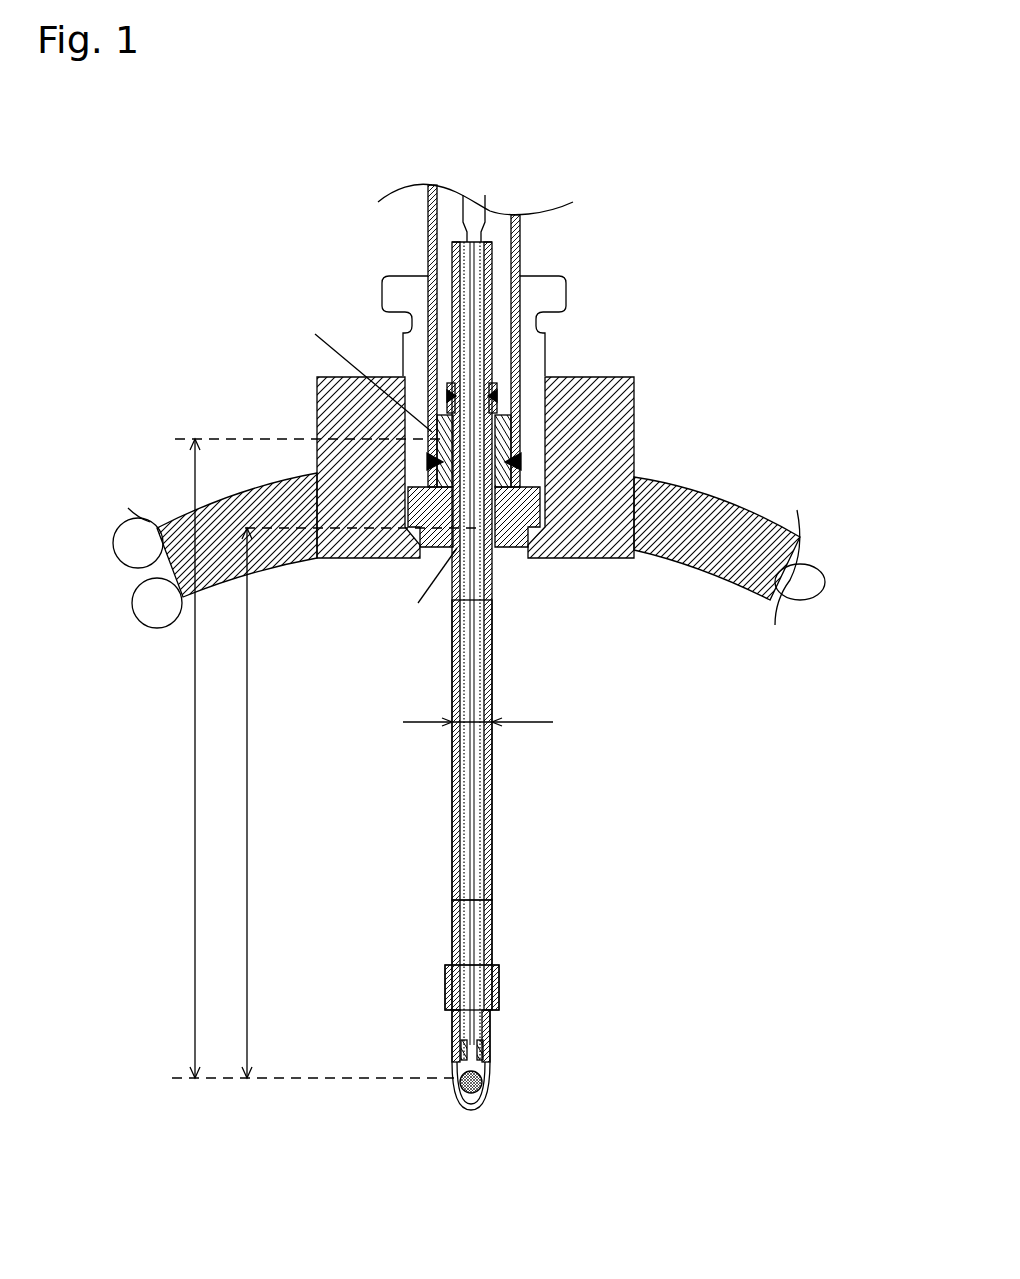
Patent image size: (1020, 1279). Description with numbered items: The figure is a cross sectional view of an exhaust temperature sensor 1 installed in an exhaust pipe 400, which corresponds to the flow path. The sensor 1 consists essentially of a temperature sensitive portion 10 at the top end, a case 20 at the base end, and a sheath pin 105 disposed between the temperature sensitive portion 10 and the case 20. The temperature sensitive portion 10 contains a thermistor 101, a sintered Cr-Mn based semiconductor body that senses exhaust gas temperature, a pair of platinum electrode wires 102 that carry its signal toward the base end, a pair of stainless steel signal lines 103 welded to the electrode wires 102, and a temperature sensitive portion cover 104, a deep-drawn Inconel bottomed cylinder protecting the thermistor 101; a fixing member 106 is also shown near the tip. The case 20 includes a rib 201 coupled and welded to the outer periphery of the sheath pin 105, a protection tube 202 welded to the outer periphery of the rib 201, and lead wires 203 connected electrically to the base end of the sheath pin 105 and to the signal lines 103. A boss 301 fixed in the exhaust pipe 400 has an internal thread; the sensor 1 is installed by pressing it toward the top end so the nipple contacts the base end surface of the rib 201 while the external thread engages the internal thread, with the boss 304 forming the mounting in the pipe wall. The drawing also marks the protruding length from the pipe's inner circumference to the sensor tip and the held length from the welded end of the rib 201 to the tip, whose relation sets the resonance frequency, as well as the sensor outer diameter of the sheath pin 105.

The exhaust temperature sensor 1 is at (742, 235).
The temperature sensitive portion 10 is at (653, 950).
The case 20 is at (150, 247).
The thermistor 101 is at (480, 1076).
The electrode wire 102 is at (458, 1047).
The signal lines 103 is at (478, 946).
The temperature sensitive portion cover 104 is at (492, 1003).
The sheath pin 105 is at (490, 808).
The fixing member 106 is at (485, 1103).
The rib 201 is at (508, 545).
The protection tube 202 is at (518, 356).
The lead wire 203 is at (486, 231).
The boss 301 is at (543, 296).
The boss 304 is at (617, 431).
The exhaust pipe 400 is at (775, 523).